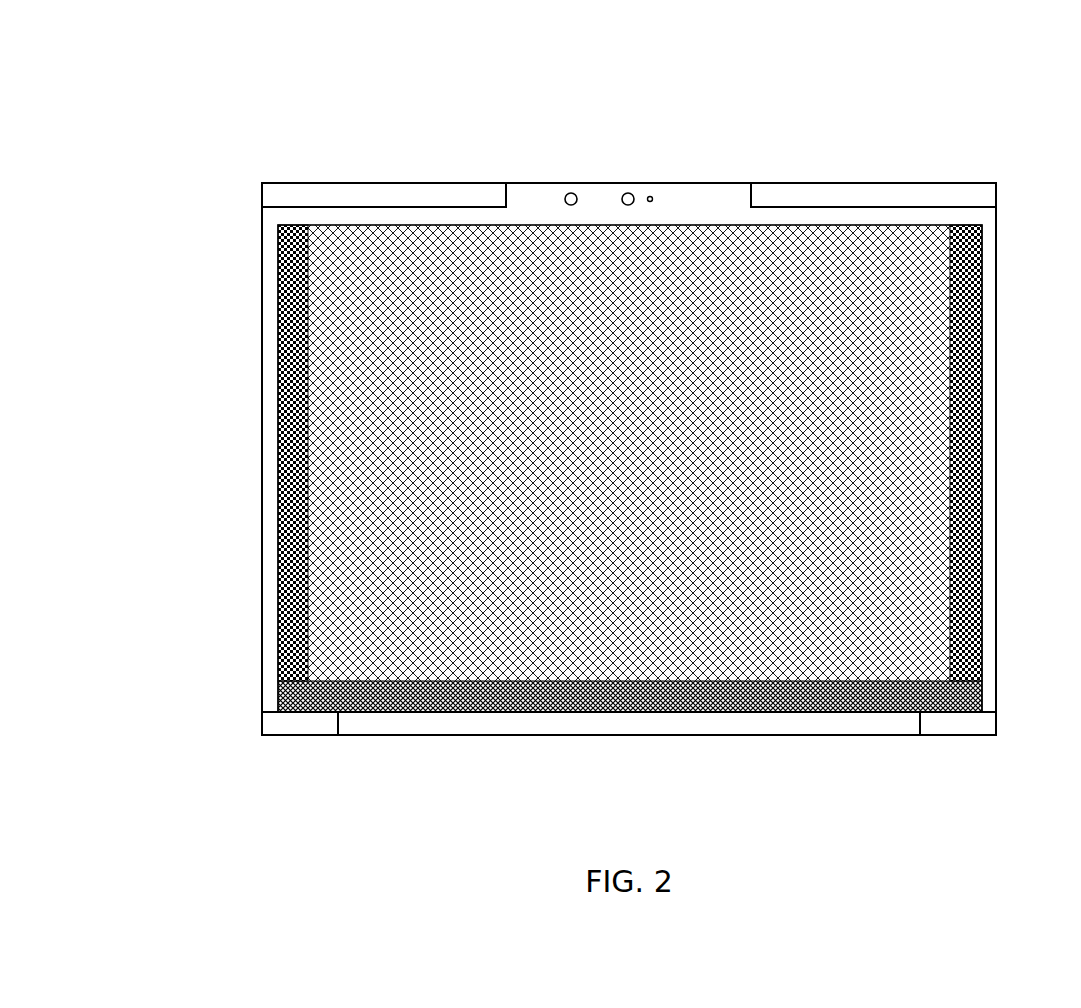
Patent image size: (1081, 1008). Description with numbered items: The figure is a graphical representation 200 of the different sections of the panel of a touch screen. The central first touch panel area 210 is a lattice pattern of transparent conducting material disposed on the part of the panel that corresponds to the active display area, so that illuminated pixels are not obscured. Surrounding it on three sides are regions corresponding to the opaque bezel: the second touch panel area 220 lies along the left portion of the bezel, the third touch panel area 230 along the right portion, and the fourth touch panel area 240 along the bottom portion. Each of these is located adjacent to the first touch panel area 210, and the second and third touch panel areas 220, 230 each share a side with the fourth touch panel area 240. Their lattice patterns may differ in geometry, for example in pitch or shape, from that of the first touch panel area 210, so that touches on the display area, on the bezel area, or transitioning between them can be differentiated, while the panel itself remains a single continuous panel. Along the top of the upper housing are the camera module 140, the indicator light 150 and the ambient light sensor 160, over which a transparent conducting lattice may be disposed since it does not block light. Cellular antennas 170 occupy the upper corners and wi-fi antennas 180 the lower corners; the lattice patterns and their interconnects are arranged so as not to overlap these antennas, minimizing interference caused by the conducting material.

The electronic device 200 is at (201, 140).
The cellular antennas 170 is at (338, 183).
The ambient light sensor 160 is at (563, 185).
The camera module 140 is at (620, 185).
The indicator light 150 is at (643, 188).
The first touch panel area 210 is at (920, 310).
The second touch panel area 220 is at (276, 376).
The third touch panel area 230 is at (955, 402).
The fourth touch panel area 240 is at (623, 690).
The wi-fi antennas 180 is at (925, 716).